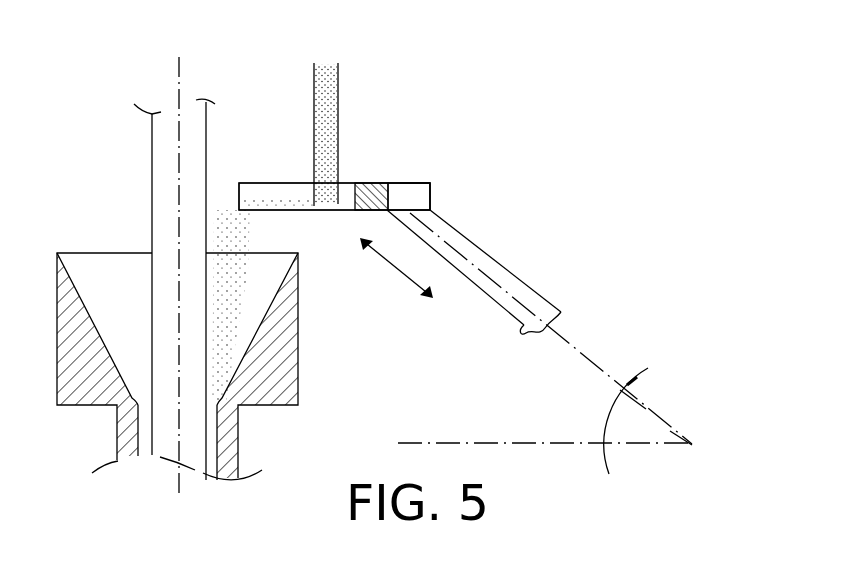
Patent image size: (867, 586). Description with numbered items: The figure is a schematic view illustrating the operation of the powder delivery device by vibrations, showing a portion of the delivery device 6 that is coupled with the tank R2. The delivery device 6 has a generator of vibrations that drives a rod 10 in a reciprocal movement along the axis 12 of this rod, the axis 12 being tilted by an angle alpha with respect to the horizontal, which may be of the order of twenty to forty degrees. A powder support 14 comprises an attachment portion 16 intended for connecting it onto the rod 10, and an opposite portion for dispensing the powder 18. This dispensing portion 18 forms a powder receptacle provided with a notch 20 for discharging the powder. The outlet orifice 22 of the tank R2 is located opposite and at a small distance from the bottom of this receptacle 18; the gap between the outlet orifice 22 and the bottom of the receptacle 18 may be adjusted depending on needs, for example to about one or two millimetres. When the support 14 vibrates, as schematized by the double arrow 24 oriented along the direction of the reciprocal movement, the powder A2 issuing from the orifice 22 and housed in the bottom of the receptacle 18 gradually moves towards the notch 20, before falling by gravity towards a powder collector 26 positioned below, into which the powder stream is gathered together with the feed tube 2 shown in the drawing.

The feed tube 2 is at (178, 78).
The tank R2 is at (313, 74).
The powder A2 is at (339, 118).
The notch 20 is at (232, 192).
The powder dispensing portion 18 is at (263, 192).
The outlet orifice 22 is at (341, 197).
The attachment portion 16 is at (402, 193).
The powder support 14 is at (427, 183).
The delivery device 6 is at (505, 217).
The rod 10 is at (523, 295).
The double arrow 24 is at (397, 268).
The powder collector 26 is at (298, 366).
The axis 12 is at (648, 392).